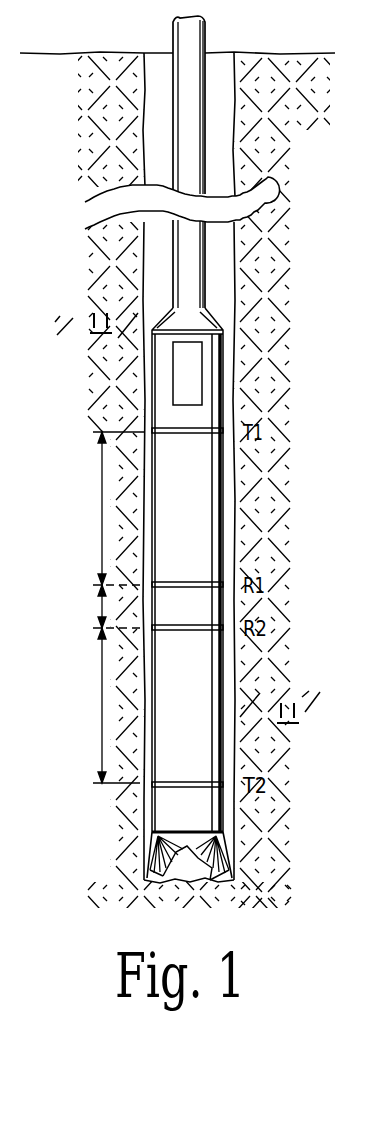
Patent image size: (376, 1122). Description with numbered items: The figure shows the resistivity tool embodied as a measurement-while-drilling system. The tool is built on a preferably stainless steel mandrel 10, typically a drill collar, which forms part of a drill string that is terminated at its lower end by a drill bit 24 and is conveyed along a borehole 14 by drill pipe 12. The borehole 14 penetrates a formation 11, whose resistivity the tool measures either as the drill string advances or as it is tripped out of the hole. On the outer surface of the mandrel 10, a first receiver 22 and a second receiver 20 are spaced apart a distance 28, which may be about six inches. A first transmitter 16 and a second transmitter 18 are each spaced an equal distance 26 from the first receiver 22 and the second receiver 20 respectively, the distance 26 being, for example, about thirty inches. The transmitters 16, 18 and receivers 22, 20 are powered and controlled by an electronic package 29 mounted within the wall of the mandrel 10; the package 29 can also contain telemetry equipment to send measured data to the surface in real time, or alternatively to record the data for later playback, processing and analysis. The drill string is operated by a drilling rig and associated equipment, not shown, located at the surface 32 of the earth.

The mandrel 10 is at (165, 376).
The formation 11 is at (187, 518).
The drill pipe 12 is at (200, 266).
The borehole 14 is at (148, 283).
The transmitter T1 16 is at (202, 427).
The transmitter T2 18 is at (212, 787).
The receiver R2 20 is at (210, 633).
The receiver R1 22 is at (202, 582).
The drill bit 24 is at (152, 852).
The transmitter-to-receiver spacing 26 is at (102, 483).
The receiver spacing 28 is at (102, 603).
The electronic package 29 is at (205, 368).
The surface of the earth 32 is at (263, 53).